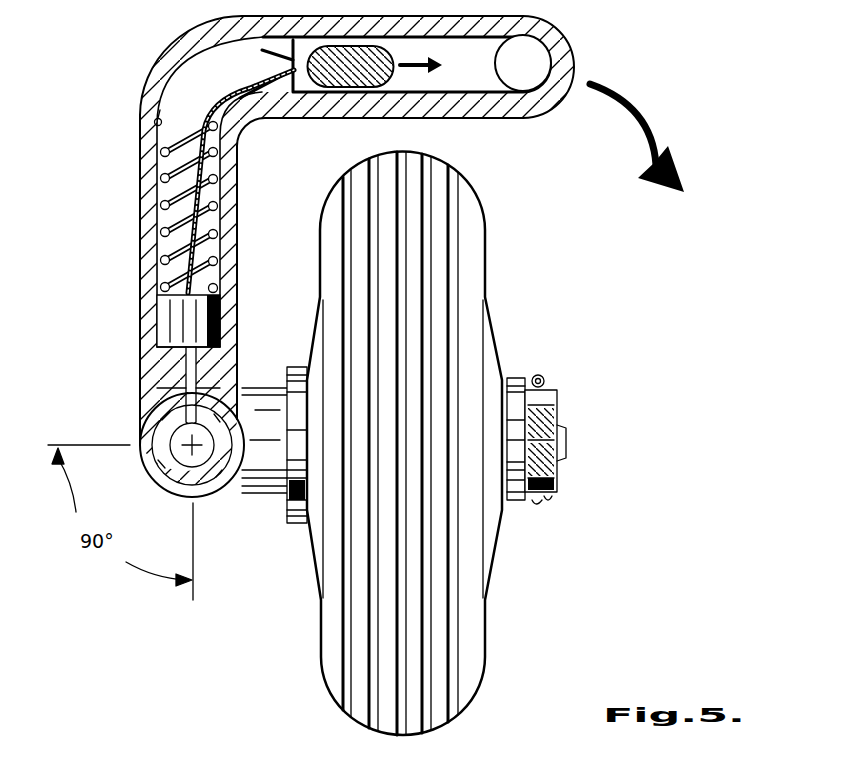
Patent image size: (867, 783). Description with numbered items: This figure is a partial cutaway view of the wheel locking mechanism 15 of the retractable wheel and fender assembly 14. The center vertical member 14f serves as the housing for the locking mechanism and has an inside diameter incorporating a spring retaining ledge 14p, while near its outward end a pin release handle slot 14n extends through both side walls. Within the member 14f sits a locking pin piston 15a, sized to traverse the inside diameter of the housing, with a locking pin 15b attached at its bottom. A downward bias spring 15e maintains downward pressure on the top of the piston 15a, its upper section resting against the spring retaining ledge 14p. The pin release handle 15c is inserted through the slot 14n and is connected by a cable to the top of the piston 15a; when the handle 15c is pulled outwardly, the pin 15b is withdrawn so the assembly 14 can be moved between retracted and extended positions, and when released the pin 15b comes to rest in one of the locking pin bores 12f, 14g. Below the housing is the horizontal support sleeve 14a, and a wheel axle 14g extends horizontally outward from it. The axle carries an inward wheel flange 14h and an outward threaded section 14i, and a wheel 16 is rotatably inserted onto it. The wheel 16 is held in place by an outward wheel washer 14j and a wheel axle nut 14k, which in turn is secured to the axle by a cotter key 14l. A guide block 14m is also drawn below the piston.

The retractable wheel and fender assembly 14 is at (136, 52).
The spring retaining ledge 14p is at (150, 118).
The center vertical member 14f is at (138, 158).
The wheel locking mechanism 15 is at (162, 250).
The downward bias spring 15e is at (240, 192).
The locking pin piston 15a is at (222, 303).
The locking pin 15b is at (200, 370).
The rod guide block 14m is at (170, 376).
The horizontal support sleeve 14a is at (142, 440).
The first wheel and fender locking pin bore 12f is at (152, 406).
The wheel axle 14g is at (257, 494).
The inward wheel flange 14h is at (298, 527).
The wheel 16 is at (488, 620).
The outward wheel washer 14j is at (514, 378).
The wheel axle nut 14k is at (560, 393).
The outward threaded section 14i is at (566, 444).
The cotter key 14l is at (545, 378).
The pin release handle 15c is at (346, 48).
The pin release handle slot 14n is at (414, 32).